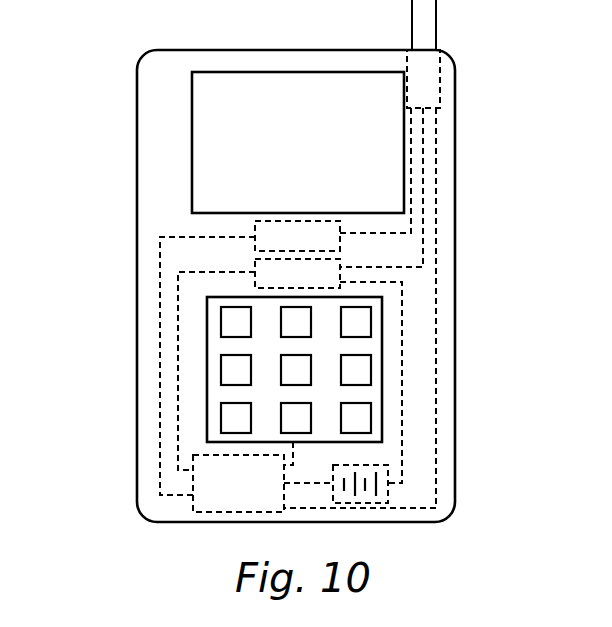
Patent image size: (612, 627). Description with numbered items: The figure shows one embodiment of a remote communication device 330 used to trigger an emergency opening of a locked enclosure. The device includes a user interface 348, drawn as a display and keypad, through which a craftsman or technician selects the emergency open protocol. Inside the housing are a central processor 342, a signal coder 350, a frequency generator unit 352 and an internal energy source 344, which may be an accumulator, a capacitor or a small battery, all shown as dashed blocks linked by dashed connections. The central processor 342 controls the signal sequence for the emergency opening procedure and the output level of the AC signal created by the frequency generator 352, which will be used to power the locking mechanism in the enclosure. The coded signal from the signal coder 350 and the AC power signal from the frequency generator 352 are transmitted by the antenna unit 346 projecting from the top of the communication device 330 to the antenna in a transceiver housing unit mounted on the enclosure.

The communication device 330 is at (150, 43).
The antenna unit 346 is at (430, 17).
The user interface 348 is at (212, 305).
The signal coder 350 is at (297, 236).
The frequency generator unit 352 is at (297, 273).
The central processor 342 is at (238, 483).
The internal energy source 344 is at (362, 497).